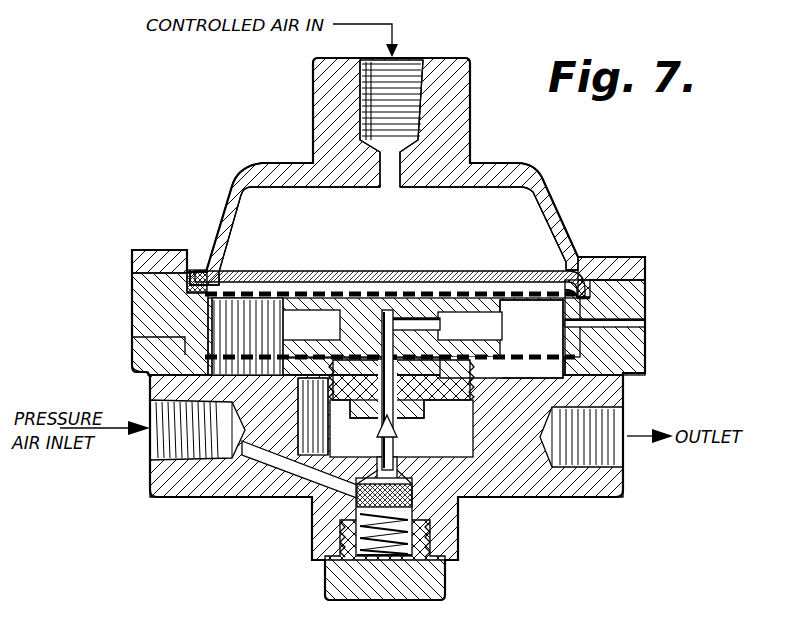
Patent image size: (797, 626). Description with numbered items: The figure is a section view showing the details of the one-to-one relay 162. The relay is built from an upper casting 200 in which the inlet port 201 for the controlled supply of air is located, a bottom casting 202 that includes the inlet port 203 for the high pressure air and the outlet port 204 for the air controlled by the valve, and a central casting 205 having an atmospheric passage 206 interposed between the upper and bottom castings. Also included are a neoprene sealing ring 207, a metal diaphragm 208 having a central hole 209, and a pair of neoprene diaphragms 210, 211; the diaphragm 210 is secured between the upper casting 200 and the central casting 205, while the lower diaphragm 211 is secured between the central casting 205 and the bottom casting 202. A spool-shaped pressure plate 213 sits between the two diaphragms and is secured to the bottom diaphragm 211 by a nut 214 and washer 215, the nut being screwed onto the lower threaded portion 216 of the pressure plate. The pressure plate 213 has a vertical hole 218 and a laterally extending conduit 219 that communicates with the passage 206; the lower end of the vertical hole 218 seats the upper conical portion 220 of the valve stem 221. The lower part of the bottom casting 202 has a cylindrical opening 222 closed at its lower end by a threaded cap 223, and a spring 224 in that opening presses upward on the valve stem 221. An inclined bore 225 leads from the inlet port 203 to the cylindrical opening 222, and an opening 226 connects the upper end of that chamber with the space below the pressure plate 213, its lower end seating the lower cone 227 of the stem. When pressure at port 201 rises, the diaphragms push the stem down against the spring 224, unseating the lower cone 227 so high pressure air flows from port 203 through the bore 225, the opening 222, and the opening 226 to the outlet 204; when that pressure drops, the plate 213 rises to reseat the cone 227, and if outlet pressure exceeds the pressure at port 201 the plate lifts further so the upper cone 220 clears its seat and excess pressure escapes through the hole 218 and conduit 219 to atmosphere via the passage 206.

The one-to-one relay 162 is at (553, 200).
The upper casting 200 is at (313, 110).
The inlet port 201 is at (414, 66).
The bottom casting 202 is at (222, 499).
The inlet port 203 is at (148, 458).
The outlet port 204 is at (624, 459).
The central casting 205 is at (138, 300).
The atmospheric passage 206 is at (646, 324).
The neoprene sealing ring 207 is at (200, 280).
The metal diaphragm 208 is at (479, 271).
The central hole 209 is at (386, 272).
The neoprene diaphragm 210 is at (523, 291).
The neoprene diaphragm 211 is at (508, 353).
The spool-shaped pressure plate 213 is at (360, 302).
The nut 214 is at (442, 394).
The washer 215 is at (453, 371).
The lower threaded portion 216 is at (412, 418).
The vertical hole 218 is at (436, 333).
The laterally extending conduit 219 is at (429, 318).
The upper conical portion 220 is at (397, 430).
The valve stem 221 is at (399, 457).
The cylindrical opening 222 is at (413, 517).
The threaded cap 223 is at (332, 581).
The spring 224 is at (410, 546).
The inclined bore 225 is at (275, 468).
The opening 226 is at (383, 452).
The lower cone 227 is at (413, 488).